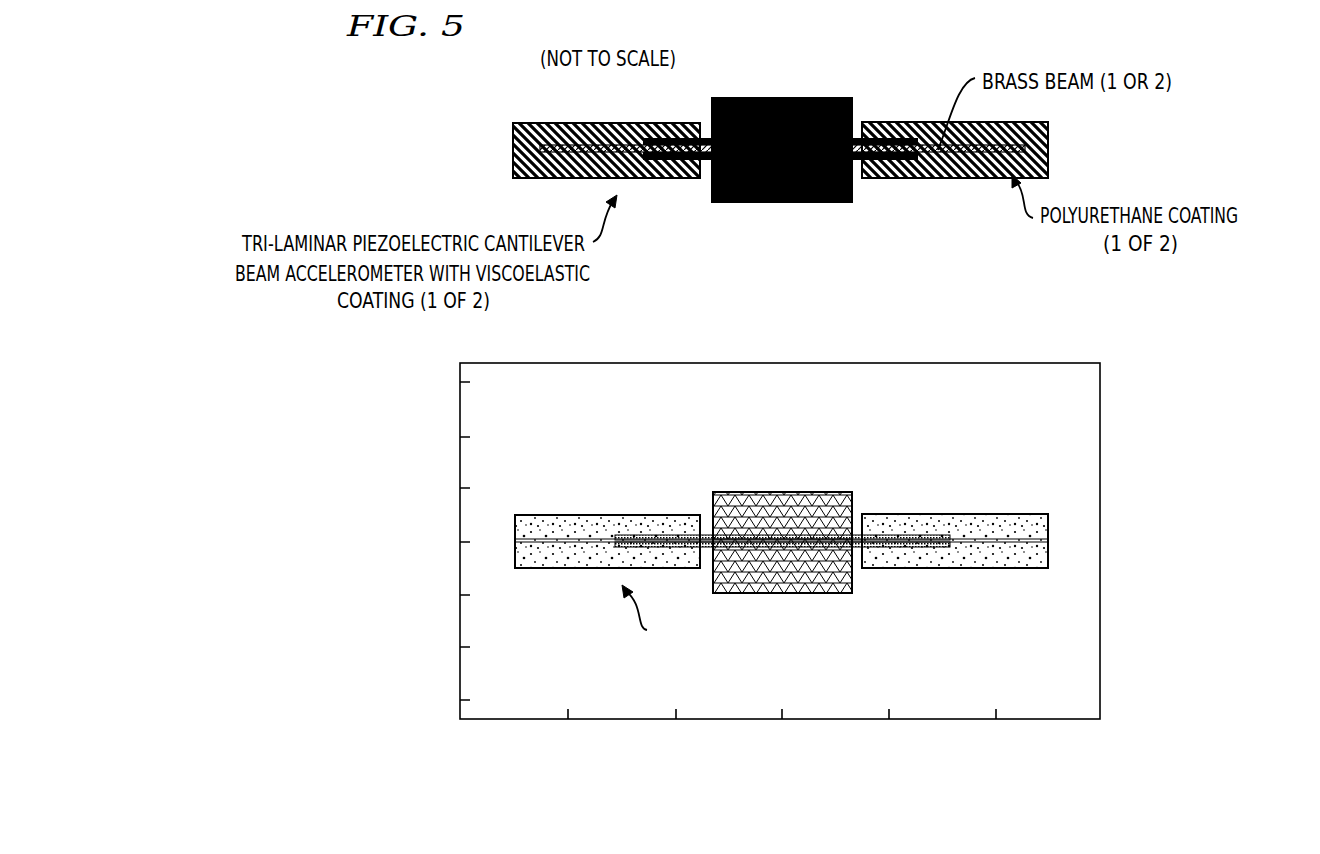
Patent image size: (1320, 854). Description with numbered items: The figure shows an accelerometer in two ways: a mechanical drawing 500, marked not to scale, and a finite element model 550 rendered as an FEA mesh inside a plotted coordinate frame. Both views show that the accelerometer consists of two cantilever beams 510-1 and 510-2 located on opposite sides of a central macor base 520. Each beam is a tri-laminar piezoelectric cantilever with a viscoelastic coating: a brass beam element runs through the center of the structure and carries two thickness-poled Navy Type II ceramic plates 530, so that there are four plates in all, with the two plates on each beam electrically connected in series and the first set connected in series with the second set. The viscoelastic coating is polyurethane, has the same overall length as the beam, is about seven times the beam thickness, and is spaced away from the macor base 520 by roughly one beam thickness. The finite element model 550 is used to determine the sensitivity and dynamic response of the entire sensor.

The mechanical drawing 500 is at (1218, 107).
The cantilever beam 510-1 is at (513, 147).
The cantilever beam 510-2 is at (1048, 148).
The macor base 520 is at (795, 98).
The ceramic plate 530 is at (880, 178).
The finite element model 550 is at (1152, 380).